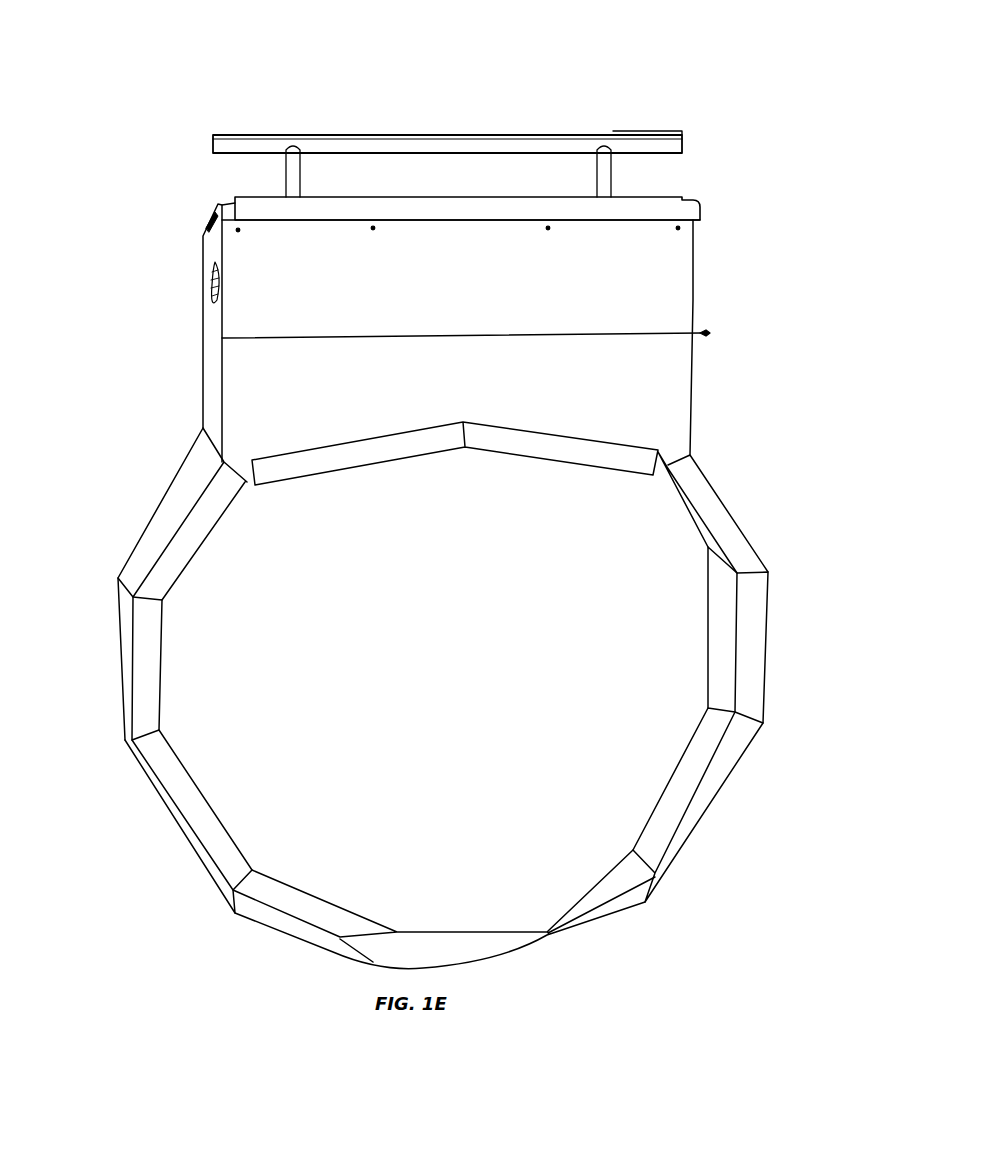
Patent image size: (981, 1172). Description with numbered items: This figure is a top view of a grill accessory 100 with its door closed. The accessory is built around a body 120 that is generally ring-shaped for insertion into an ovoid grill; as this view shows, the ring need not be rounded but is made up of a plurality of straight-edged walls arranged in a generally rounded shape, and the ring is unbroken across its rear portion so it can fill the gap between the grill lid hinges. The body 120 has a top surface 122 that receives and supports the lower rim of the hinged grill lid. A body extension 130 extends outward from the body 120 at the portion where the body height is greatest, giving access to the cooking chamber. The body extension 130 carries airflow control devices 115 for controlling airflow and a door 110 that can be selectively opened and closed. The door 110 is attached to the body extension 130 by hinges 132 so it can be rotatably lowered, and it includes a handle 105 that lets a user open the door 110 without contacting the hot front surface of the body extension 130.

The grill accessory 100 is at (670, 57).
The handle 105 is at (455, 133).
The door 110 is at (233, 203).
The airflow control device 115 is at (206, 288).
The body 120 is at (386, 698).
The top surface 122 is at (128, 618).
The body extension 130 is at (743, 183).
The hinge 132 is at (203, 233).